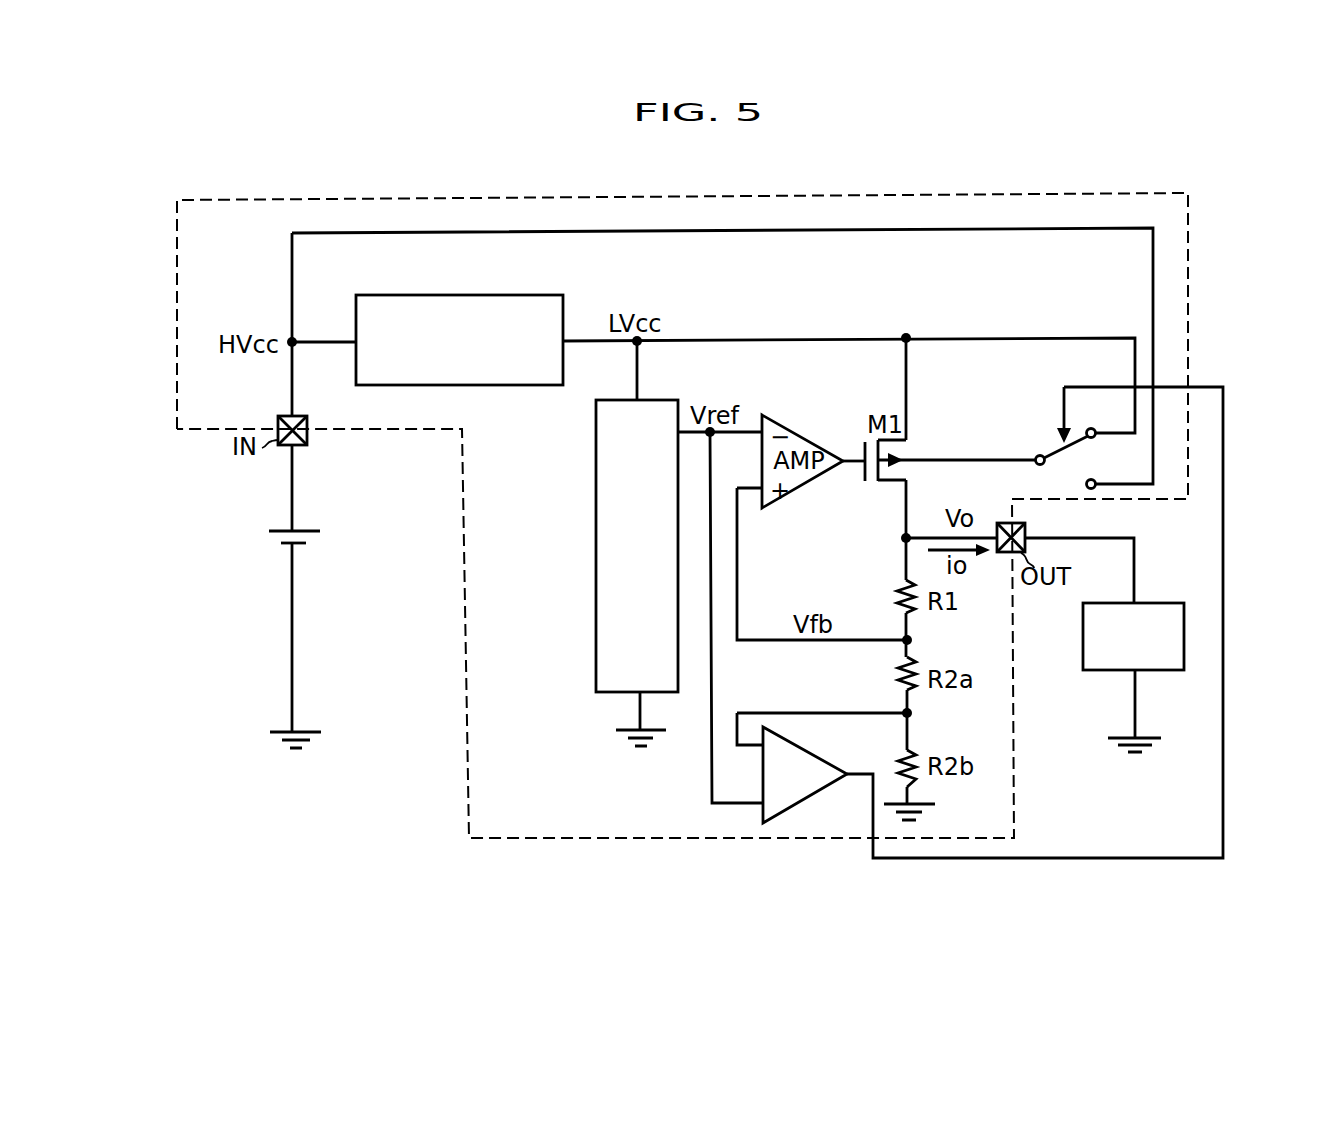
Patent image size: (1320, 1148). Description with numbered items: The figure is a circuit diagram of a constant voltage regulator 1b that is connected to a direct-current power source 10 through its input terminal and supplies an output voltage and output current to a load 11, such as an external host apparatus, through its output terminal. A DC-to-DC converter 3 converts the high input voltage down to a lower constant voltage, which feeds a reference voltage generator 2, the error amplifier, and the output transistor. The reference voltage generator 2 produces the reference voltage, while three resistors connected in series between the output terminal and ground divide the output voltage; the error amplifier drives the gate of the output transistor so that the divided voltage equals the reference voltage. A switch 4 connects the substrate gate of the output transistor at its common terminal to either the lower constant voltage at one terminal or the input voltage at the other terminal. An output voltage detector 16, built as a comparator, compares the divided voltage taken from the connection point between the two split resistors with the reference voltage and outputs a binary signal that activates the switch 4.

The constant voltage regulator 1b is at (1178, 193).
The reference voltage generator 2 is at (665, 400).
The DC-to-DC converter 3 is at (549, 295).
The switch 4 is at (1057, 450).
The direct-current power source 10 is at (300, 530).
The load 11 is at (1163, 603).
The output voltage detector 16 is at (831, 748).